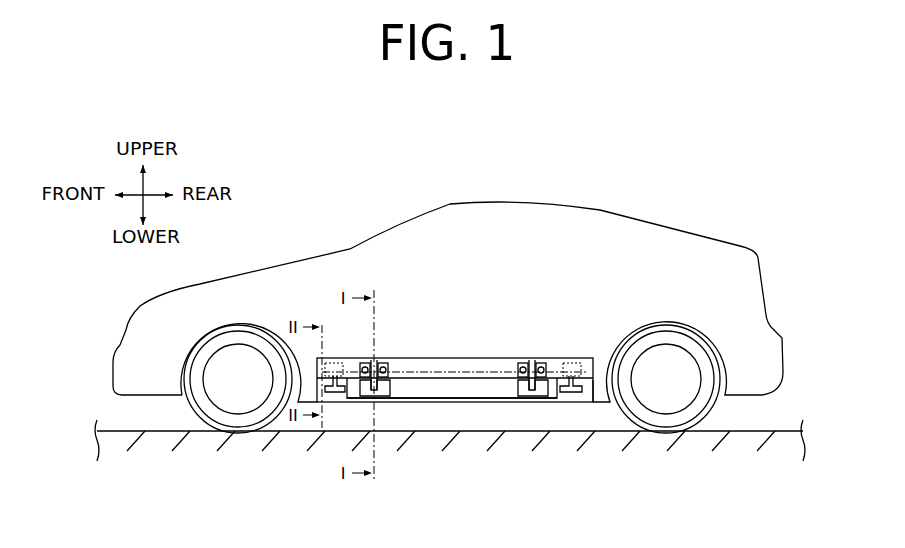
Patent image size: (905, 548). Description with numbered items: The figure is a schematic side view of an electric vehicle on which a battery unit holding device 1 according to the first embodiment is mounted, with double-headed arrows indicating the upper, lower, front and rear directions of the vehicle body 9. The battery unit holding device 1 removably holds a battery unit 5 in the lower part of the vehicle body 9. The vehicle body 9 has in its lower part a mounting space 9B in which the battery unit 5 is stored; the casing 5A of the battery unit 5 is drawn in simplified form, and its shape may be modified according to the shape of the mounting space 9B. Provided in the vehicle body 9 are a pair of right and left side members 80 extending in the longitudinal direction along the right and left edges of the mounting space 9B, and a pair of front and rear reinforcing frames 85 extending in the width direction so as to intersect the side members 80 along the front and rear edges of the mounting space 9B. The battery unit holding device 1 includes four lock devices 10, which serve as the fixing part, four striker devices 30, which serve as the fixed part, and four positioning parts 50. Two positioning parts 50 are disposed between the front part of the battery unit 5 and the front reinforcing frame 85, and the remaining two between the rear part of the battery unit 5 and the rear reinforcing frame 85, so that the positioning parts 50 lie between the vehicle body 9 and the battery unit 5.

The battery unit holding device 1 is at (592, 408).
The battery unit 5 is at (464, 386).
The casing 5A is at (437, 391).
The vehicle body 9 is at (497, 260).
The mounting space 9B is at (593, 381).
The lock device 10 is at (387, 405).
The striker device 30 is at (376, 356).
The positioning part 50 is at (335, 404).
The side member 80 is at (496, 356).
The reinforcing frame 85 is at (335, 357).